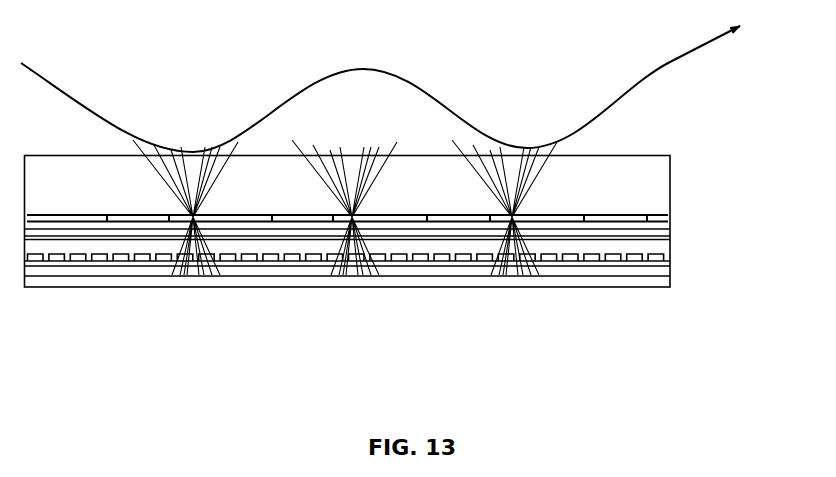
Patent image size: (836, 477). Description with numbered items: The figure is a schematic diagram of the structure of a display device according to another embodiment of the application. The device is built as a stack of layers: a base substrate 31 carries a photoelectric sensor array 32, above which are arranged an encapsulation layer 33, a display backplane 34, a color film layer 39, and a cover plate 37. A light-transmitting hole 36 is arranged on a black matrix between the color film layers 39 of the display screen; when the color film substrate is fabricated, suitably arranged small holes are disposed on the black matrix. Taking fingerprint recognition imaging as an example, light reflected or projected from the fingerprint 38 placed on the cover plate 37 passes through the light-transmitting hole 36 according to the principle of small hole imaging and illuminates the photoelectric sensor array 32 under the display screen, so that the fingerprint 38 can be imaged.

The base substrate 31 is at (506, 273).
The photoelectric sensor array 32 is at (572, 259).
The encapsulation layer 33 is at (637, 244).
The display backplane 34 is at (633, 227).
The light-transmitting hole 36 is at (512, 217).
The cover plate 37 is at (593, 165).
The fingerprint 38 is at (390, 81).
The color film layer 39 is at (657, 219).